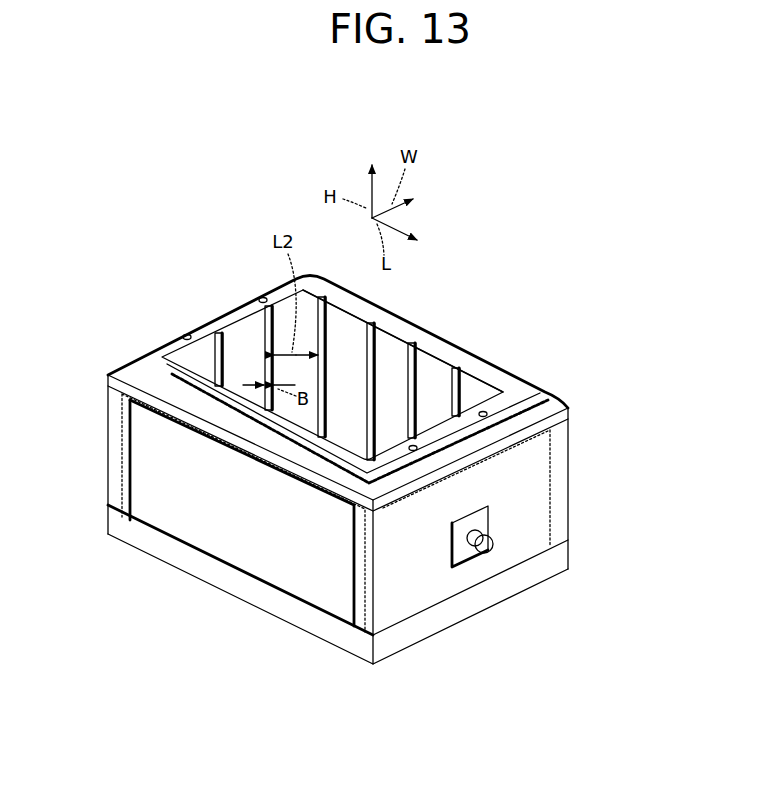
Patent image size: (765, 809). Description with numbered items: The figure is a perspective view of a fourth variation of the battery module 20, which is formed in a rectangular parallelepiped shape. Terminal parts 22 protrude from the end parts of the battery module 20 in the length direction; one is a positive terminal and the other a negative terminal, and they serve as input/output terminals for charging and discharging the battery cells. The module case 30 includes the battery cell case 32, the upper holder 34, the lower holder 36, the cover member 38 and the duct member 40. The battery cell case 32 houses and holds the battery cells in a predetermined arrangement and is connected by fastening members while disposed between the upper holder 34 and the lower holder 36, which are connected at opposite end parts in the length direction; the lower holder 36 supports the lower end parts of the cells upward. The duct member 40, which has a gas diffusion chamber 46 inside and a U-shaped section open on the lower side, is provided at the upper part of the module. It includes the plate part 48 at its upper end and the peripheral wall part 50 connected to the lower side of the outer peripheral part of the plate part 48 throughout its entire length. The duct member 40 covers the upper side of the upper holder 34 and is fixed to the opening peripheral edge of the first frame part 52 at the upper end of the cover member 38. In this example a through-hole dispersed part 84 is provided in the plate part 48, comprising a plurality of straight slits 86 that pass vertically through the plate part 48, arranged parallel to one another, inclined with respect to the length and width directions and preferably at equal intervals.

The battery module 20 is at (430, 295).
The terminal part 22 is at (472, 560).
The module case 30 is at (520, 498).
The battery cell case 32 is at (215, 513).
The upper holder 34 is at (293, 477).
The lower holder 36 is at (297, 613).
The cover member 38 is at (533, 453).
The duct member 40 is at (493, 378).
The gas diffusion chamber 46 is at (169, 338).
The plate part 48 is at (212, 320).
The peripheral wall part 50 is at (132, 404).
The first frame part 52 is at (513, 422).
The through-hole dispersed part 84 is at (455, 291).
The slit 86 is at (418, 375).